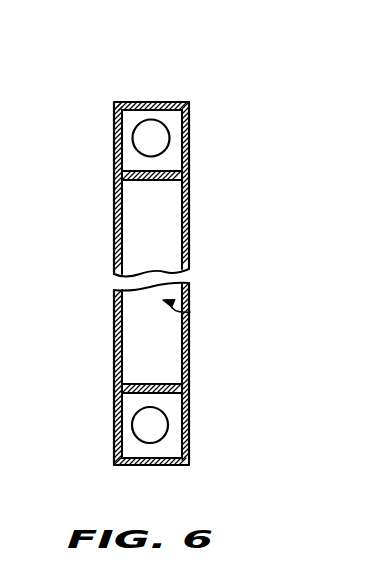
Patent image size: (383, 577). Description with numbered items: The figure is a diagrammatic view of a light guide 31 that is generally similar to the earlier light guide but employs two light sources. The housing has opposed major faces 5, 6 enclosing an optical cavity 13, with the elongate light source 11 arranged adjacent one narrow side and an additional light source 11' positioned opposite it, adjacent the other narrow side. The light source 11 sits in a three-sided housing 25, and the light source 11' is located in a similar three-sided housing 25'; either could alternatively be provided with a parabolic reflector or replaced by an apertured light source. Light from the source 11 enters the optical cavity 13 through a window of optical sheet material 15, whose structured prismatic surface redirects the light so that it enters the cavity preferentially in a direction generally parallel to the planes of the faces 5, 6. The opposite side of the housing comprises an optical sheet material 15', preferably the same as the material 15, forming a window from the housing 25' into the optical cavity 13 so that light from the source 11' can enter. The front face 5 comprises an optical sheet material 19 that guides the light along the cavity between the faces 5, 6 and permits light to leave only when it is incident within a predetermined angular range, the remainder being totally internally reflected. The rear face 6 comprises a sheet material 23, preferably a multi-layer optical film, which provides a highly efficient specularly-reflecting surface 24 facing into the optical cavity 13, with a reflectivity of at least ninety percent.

The light guide 31 is at (212, 119).
The major face 5 is at (104, 215).
The major face 6 is at (199, 204).
The optical sheet material 19 is at (114, 262).
The sheet material 23 is at (190, 252).
The optical cavity 13 is at (167, 345).
The specularly-reflecting surface 24 is at (190, 312).
The three-sided housing 25' is at (120, 127).
The three-sided housing 25 is at (119, 441).
The optical sheet material 15' is at (183, 159).
The optical sheet material 15 is at (182, 401).
The additional light source 11' is at (174, 100).
The elongate light source 11 is at (186, 433).